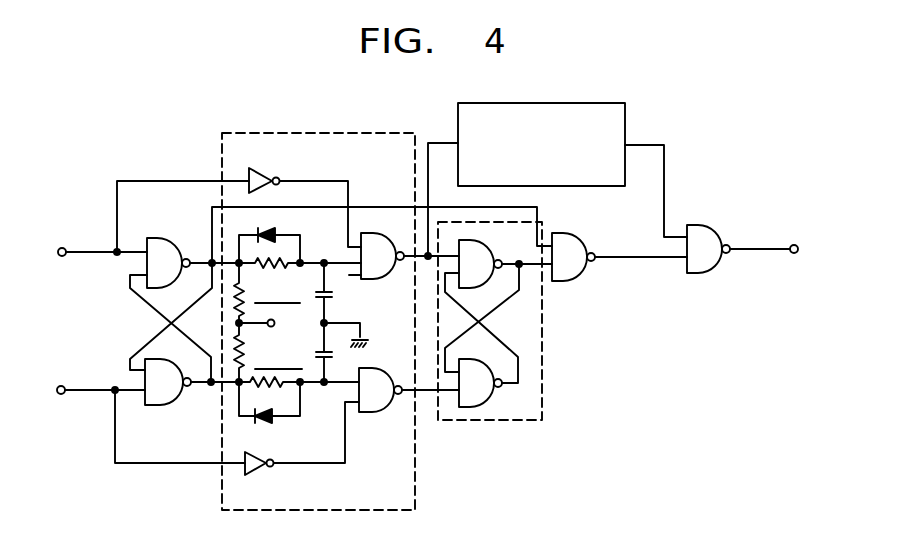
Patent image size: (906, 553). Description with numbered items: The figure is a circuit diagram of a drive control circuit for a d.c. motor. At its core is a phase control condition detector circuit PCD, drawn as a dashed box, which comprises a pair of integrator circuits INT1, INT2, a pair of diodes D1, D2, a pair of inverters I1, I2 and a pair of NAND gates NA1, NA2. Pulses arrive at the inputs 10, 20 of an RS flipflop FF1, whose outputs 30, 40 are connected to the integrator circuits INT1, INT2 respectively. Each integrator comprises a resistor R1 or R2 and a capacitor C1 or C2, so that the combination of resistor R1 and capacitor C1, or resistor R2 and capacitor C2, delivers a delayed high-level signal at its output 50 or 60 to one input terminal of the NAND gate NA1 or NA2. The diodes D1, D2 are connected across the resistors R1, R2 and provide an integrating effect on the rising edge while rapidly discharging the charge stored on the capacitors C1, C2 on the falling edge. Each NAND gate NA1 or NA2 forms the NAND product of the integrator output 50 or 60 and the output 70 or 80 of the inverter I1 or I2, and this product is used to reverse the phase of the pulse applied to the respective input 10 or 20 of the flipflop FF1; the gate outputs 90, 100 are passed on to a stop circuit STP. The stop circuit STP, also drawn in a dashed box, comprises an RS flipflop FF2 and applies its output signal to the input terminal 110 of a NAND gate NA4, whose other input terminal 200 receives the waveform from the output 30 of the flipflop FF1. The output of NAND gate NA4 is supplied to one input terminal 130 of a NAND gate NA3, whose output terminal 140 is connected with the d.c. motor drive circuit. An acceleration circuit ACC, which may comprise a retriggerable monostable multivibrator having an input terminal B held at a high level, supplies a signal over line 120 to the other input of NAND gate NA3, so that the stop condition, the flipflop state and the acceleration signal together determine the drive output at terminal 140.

The input 10 is at (62, 248).
The input 20 is at (61, 386).
The output of RS flipflop FF1 30 is at (200, 262).
The output of RS flipflop FF1 40 is at (200, 385).
The output of integrator circuit INT1 50 is at (362, 279).
The output of integrator circuit INT2 60 is at (347, 385).
The output of inverter I1 70 is at (340, 262).
The output of inverter I2 80 is at (345, 464).
The NAND gate NA1 output 90 is at (400, 251).
The NAND gate NA2 output 100 is at (424, 392).
The input terminal of NAND gate NA4 110 is at (532, 267).
The acceleration circuit output line 120 is at (665, 178).
The input terminal of NAND gate NA3 130 is at (628, 259).
The output terminal of NAND gate NA3 140 is at (794, 253).
The input terminal of NAND gate NA4 200 is at (471, 207).
The RS flipflop FF1 is at (146, 234).
The RS flipflop FF2 is at (490, 406).
The inverter I1 is at (272, 152).
The inverter I2 is at (255, 470).
The NAND gate NA1 is at (372, 233).
The NAND gate NA2 is at (370, 415).
The NAND gate NA3 is at (715, 226).
The NAND gate NA4 is at (567, 233).
The resistor R1 is at (282, 258).
The resistor R2 is at (280, 386).
The diode D1 is at (268, 233).
The diode D2 is at (264, 420).
The capacitor C1 is at (333, 296).
The capacitor C2 is at (334, 356).
The integrator circuit INT1 is at (267, 293).
The integrator circuit INT2 is at (268, 351).
The phase control condition detector circuit PCD is at (318, 133).
The stop circuit STP is at (543, 372).
The acceleration circuit ACC is at (625, 108).
The input terminal B is at (273, 324).